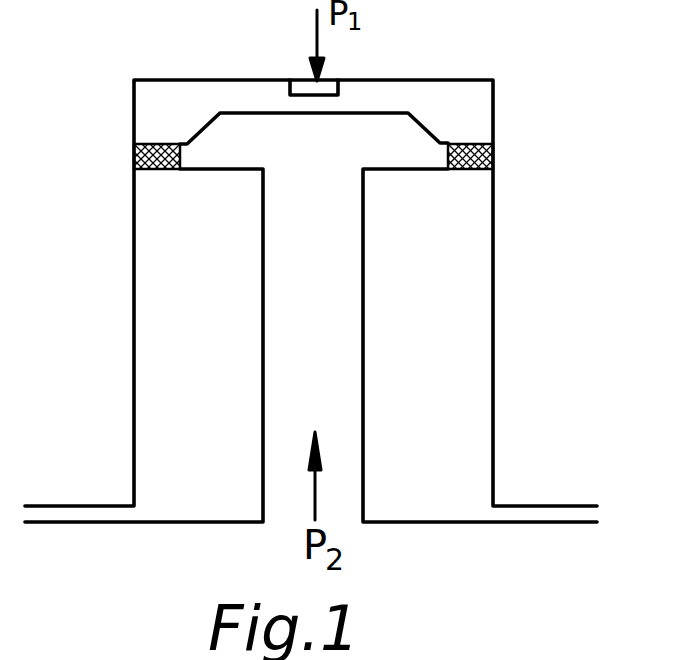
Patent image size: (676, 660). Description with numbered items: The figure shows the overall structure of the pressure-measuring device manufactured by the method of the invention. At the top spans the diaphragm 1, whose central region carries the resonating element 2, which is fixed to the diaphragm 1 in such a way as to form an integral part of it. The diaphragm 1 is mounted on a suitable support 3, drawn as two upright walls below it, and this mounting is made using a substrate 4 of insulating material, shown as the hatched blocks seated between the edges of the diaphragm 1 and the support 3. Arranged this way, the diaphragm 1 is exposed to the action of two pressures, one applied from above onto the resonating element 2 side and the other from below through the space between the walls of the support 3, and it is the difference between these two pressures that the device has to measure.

The diaphragm 1 is at (467, 122).
The resonating element 2 is at (320, 90).
The support 3 is at (155, 328).
The substrate of insulating material 4 is at (135, 172).